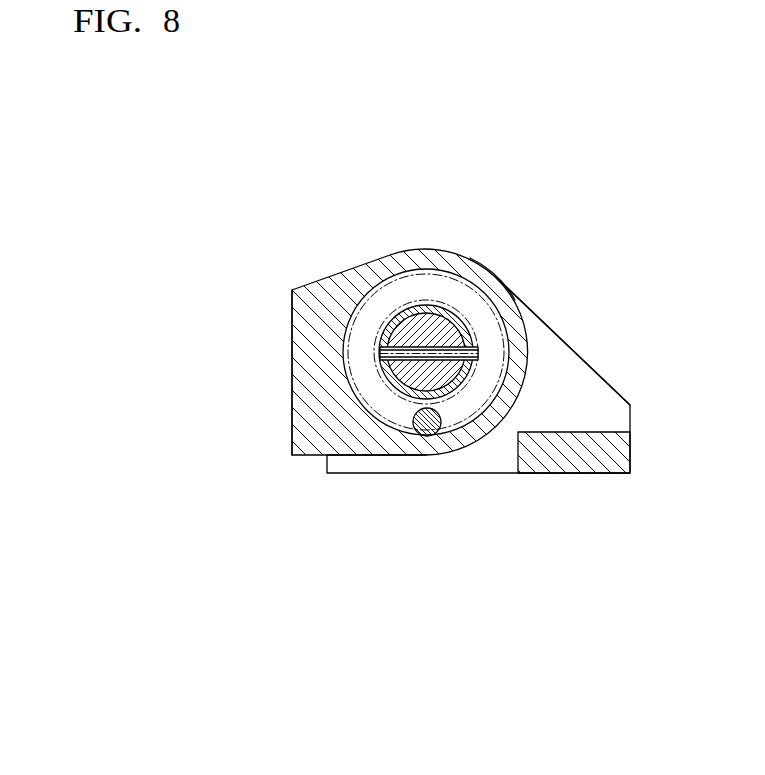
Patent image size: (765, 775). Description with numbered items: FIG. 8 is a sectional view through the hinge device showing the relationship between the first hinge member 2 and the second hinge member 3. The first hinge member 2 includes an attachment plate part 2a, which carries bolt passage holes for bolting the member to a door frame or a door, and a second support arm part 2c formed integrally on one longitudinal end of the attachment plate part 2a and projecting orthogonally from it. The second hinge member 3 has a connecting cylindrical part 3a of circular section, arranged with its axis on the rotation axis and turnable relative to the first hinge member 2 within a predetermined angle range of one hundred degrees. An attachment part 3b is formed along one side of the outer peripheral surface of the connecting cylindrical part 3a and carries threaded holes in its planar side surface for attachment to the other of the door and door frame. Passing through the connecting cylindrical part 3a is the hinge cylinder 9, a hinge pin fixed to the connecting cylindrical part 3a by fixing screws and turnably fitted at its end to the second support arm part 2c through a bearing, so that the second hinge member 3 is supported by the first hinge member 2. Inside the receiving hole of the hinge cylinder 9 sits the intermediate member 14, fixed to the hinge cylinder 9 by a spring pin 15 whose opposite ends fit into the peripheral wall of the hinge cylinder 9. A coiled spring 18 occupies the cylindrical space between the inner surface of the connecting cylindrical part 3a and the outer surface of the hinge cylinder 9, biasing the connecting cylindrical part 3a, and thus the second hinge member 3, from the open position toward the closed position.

The first hinge member 2 is at (570, 342).
The attachment plate part 2a is at (537, 464).
The second support arm part 2c is at (596, 384).
The second hinge member 3 is at (322, 276).
The connecting cylindrical part 3a is at (493, 287).
The attachment part 3b is at (292, 406).
The hinge cylinder 9 is at (413, 394).
The intermediate member 14 is at (441, 375).
The spring pin 15 is at (451, 346).
The coiled spring 18 is at (425, 428).